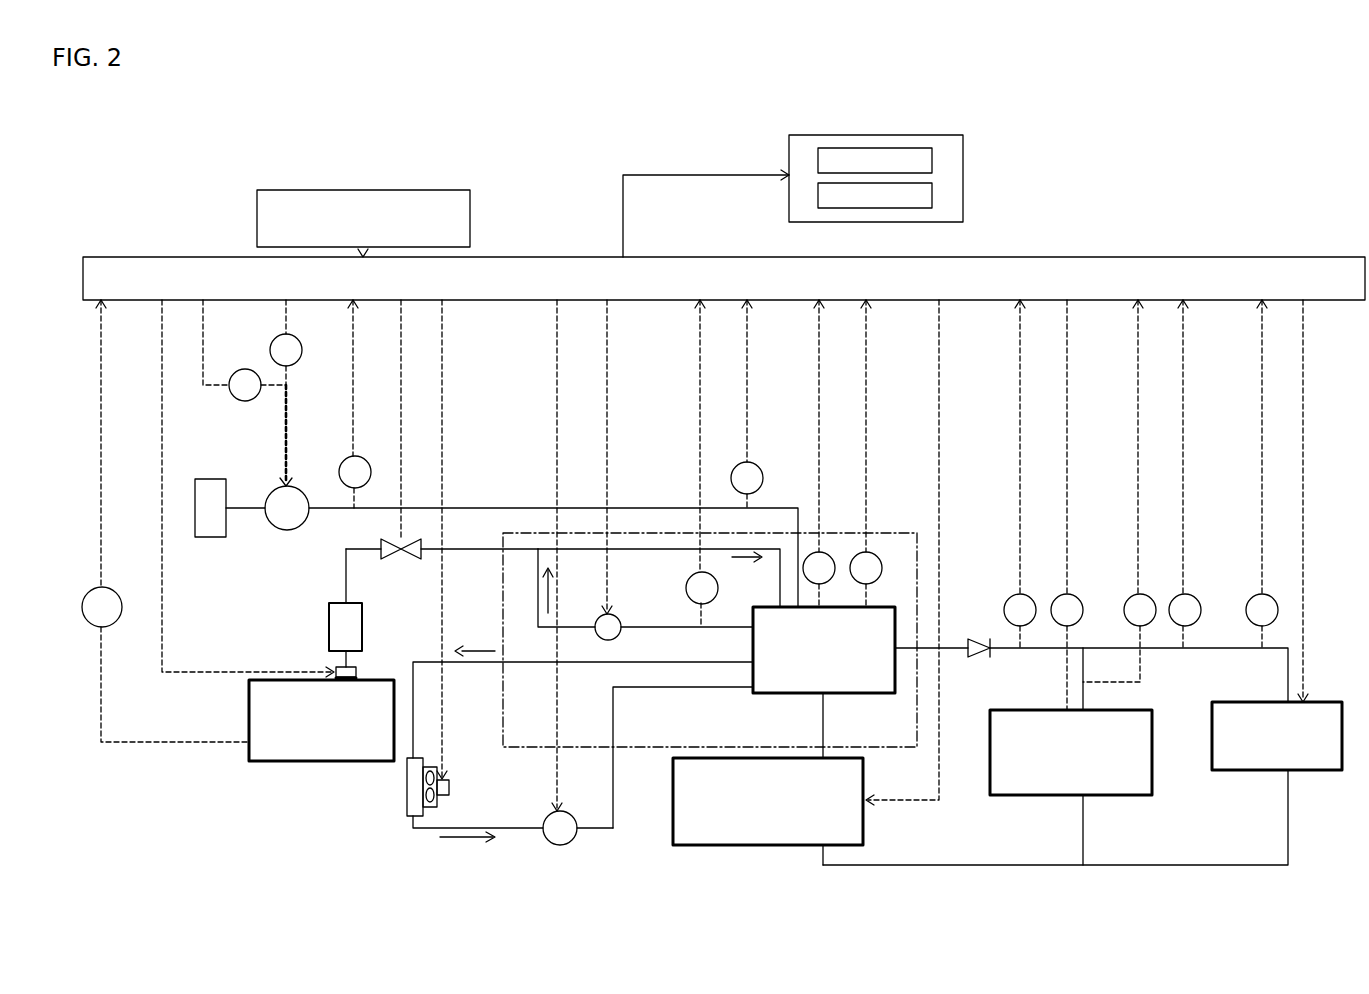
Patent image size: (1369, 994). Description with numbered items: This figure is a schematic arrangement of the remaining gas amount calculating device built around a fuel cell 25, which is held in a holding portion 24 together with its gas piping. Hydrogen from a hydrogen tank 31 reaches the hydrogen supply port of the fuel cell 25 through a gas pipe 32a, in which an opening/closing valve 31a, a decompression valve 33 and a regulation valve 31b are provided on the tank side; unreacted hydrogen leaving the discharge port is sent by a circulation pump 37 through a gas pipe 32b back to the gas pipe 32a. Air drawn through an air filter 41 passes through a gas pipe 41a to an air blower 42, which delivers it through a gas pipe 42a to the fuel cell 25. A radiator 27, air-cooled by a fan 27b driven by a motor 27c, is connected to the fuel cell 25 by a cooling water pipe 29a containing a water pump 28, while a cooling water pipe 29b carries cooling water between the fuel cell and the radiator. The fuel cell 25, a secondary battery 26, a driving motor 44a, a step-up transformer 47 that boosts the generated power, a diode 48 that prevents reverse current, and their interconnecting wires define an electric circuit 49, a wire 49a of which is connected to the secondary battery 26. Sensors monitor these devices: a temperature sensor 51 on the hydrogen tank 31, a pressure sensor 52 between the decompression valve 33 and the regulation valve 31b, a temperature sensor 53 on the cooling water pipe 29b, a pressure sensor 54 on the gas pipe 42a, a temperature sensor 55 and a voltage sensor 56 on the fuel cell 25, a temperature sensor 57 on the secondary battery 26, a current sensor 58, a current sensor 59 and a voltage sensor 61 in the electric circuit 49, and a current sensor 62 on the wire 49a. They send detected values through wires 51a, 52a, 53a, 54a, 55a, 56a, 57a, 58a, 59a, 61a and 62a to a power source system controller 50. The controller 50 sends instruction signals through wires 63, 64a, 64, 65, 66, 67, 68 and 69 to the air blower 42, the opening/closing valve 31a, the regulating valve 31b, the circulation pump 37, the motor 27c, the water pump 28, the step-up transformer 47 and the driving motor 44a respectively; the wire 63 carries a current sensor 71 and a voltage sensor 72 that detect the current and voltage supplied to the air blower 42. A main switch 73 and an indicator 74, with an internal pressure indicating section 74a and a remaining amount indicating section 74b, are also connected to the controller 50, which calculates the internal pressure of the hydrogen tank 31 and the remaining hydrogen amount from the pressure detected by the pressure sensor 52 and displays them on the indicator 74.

The holding portion 24 is at (652, 750).
The fuel cell 25 is at (835, 693).
The secondary battery 26 is at (1105, 795).
The radiator 27 is at (407, 807).
The fan 27b is at (438, 807).
The motor 27c is at (450, 782).
The water pump 28 is at (552, 843).
The cooling water pipe 29a is at (614, 800).
The cooling water pipe 29b is at (468, 665).
The hydrogen tank 31 is at (249, 708).
The opening/closing valve 31a is at (358, 674).
The regulation valve 31b is at (401, 562).
The gas pipe 32a is at (650, 549).
The gas pipe 32b is at (650, 627).
The decompression valve 33 is at (329, 627).
The circulation pump 37 is at (604, 641).
The air filter 41 is at (208, 537).
The gas pipe 41a is at (244, 512).
The air blower 42 is at (290, 530).
The gas pipe 42a is at (722, 508).
The driving motor 44a is at (1298, 770).
The step-up transformer 47 is at (863, 828).
The diode 48 is at (978, 638).
The electric circuit 49 is at (1228, 868).
The wire 49a is at (1083, 697).
The power source system controller 50 is at (1268, 257).
The temperature sensor 51 is at (82, 607).
The wire 51a is at (101, 425).
The pressure sensor 52 is at (339, 476).
The wire 52a is at (353, 350).
The temperature sensor 53 is at (718, 588).
The wire 53a is at (700, 358).
The pressure sensor 54 is at (763, 480).
The wire 54a is at (747, 413).
The temperature sensor 55 is at (833, 556).
The wire 55a is at (819, 358).
The voltage sensor 56 is at (880, 556).
The wire 56a is at (866, 440).
The temperature sensor 57 is at (1081, 598).
The wire 57a is at (1067, 440).
The current sensor 58 is at (1034, 598).
The wire 58a is at (1020, 362).
The current sensor 59 is at (1199, 598).
The wire 59a is at (1183, 440).
The voltage sensor 61 is at (1276, 598).
The wire 61a is at (1262, 362).
The current sensor 62 is at (1154, 598).
The wire 62a is at (1138, 362).
The wire 63 is at (283, 466).
The wire 64 is at (401, 366).
The wire 64a is at (162, 455).
The wire 65 is at (607, 440).
The wire 66 is at (442, 445).
The wire 67 is at (557, 358).
The wire 68 is at (939, 440).
The wire 69 is at (1303, 357).
The current sensor 71 is at (302, 358).
The voltage sensor 72 is at (247, 369).
The main switch 73 is at (396, 190).
The indicator 74 is at (963, 178).
The internal pressure indicating section 74a is at (901, 148).
The remaining amount indicating section 74b is at (893, 208).